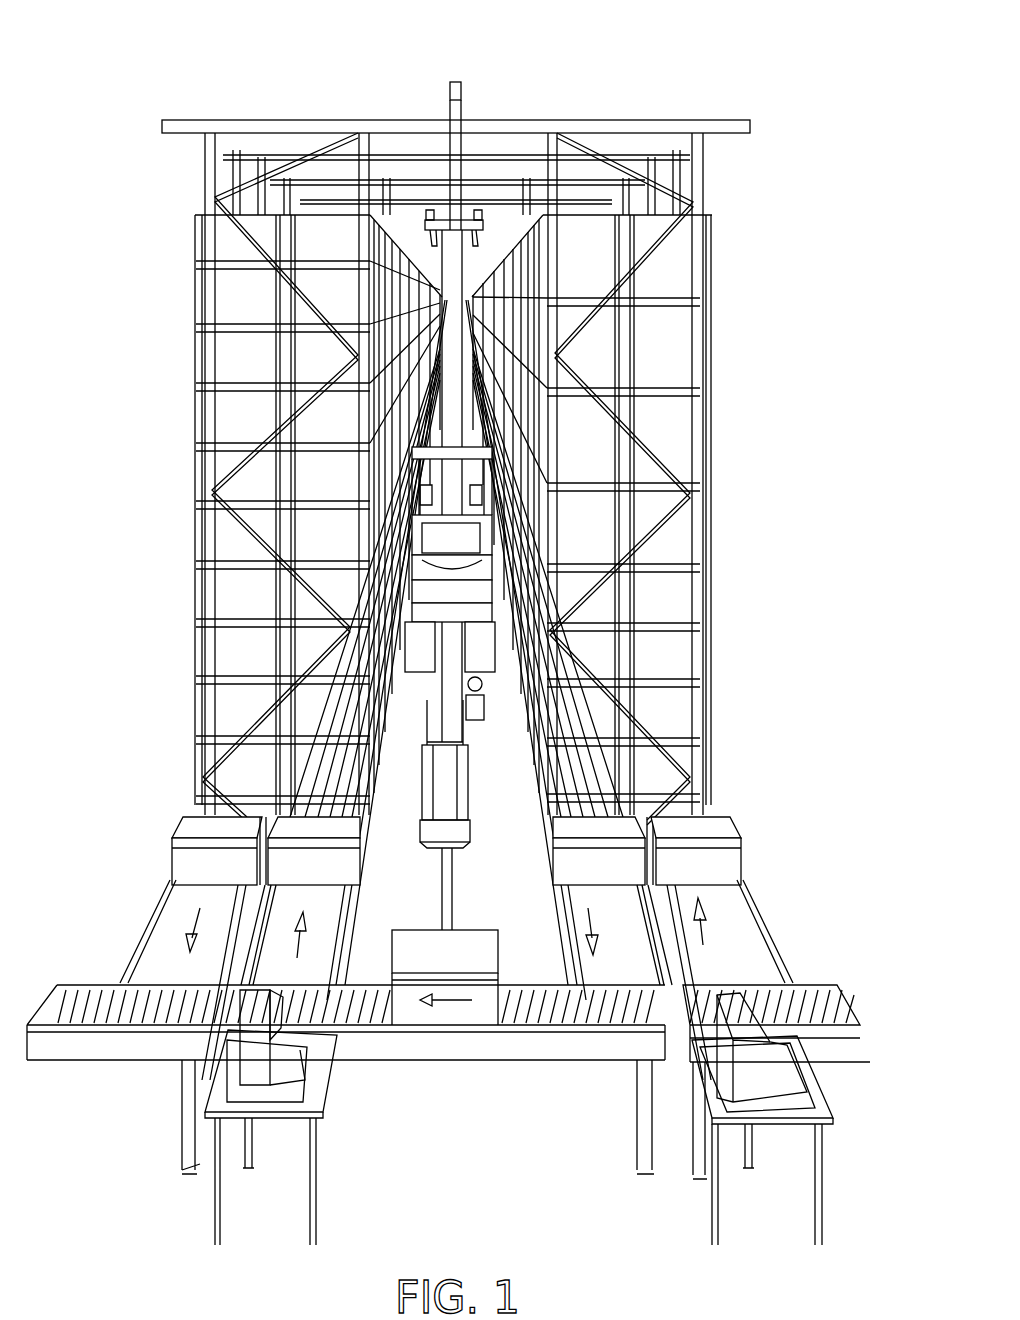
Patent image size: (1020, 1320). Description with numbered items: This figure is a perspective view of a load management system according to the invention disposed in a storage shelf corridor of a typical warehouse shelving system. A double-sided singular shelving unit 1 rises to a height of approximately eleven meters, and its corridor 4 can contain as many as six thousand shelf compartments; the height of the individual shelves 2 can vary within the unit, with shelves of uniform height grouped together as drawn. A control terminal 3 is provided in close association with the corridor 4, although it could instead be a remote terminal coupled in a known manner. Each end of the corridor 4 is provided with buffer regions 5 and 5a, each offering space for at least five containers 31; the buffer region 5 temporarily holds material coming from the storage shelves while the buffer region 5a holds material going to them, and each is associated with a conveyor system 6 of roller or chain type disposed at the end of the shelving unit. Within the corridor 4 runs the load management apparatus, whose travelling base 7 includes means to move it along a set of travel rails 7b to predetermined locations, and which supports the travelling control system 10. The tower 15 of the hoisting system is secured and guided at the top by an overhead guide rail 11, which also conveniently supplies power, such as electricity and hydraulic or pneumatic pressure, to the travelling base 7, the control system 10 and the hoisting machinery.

The shelving unit 1 is at (800, 68).
The shelves 2 is at (673, 595).
The control terminal 3 is at (738, 1015).
The corridor 4 is at (520, 900).
The buffer region 5 is at (183, 926).
The buffer region 5a is at (706, 915).
The conveyor system 6 is at (612, 1010).
The travelling base 7 is at (455, 763).
The travel rails 7b is at (445, 872).
The travelling control system 10 is at (440, 540).
The overhead guide rail 11 is at (458, 100).
The tower 15 is at (450, 296).
The containers 31 is at (480, 1008).